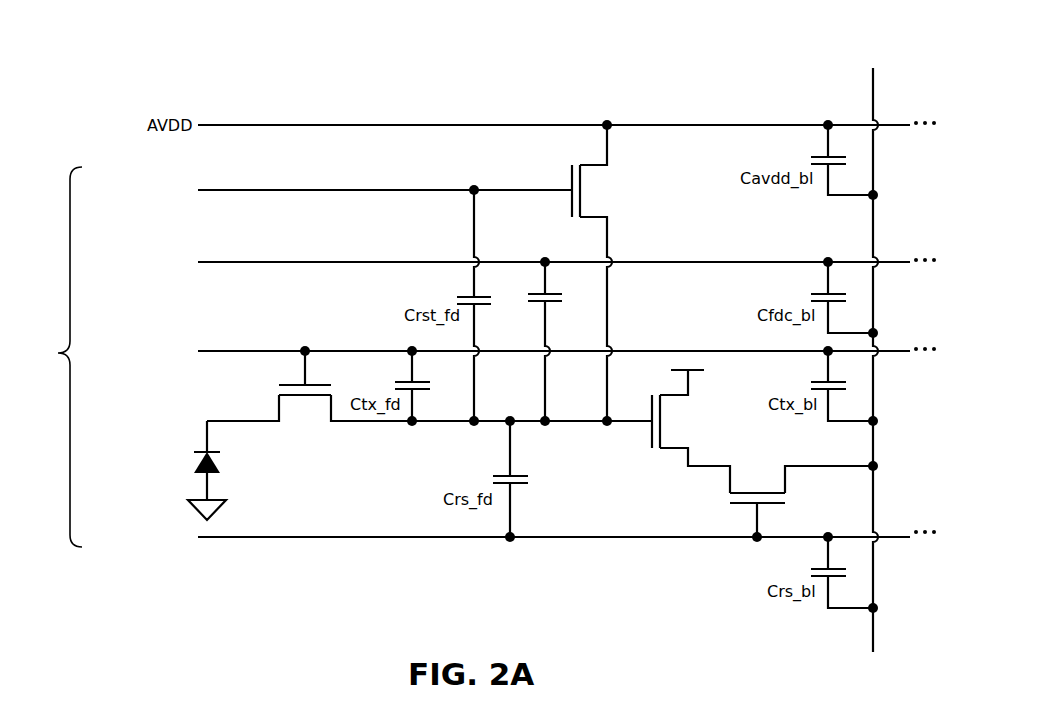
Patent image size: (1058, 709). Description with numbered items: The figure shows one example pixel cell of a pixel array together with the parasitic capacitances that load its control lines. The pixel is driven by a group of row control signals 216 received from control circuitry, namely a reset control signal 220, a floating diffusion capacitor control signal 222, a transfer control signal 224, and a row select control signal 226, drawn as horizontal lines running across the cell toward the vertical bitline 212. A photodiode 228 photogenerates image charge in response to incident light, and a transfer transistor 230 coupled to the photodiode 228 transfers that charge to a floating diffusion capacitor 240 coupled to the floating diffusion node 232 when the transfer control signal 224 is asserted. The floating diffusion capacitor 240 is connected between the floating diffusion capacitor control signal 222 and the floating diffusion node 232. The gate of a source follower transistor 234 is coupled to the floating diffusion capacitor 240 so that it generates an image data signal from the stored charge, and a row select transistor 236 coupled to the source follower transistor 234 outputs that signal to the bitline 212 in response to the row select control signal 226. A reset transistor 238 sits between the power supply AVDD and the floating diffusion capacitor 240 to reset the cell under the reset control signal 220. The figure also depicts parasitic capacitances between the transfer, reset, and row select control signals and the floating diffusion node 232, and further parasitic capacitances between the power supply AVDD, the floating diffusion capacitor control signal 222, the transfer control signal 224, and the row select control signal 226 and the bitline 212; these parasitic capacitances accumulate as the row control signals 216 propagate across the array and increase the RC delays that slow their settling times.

The bitline 212 is at (830, 52).
The row control signals 216 is at (58, 351).
The reset control signal 220 is at (148, 191).
The floating diffusion capacitor control signal 222 is at (148, 261).
The transfer control signal 224 is at (148, 351).
The row select control signal 226 is at (148, 539).
The photodiode 228 is at (221, 465).
The transfer transistor 230 is at (276, 408).
The floating diffusion node 232 is at (605, 454).
The source follower transistor 234 is at (672, 454).
The row select transistor 236 is at (728, 484).
The reset transistor 238 is at (567, 187).
The floating diffusion capacitor 240 is at (539, 306).